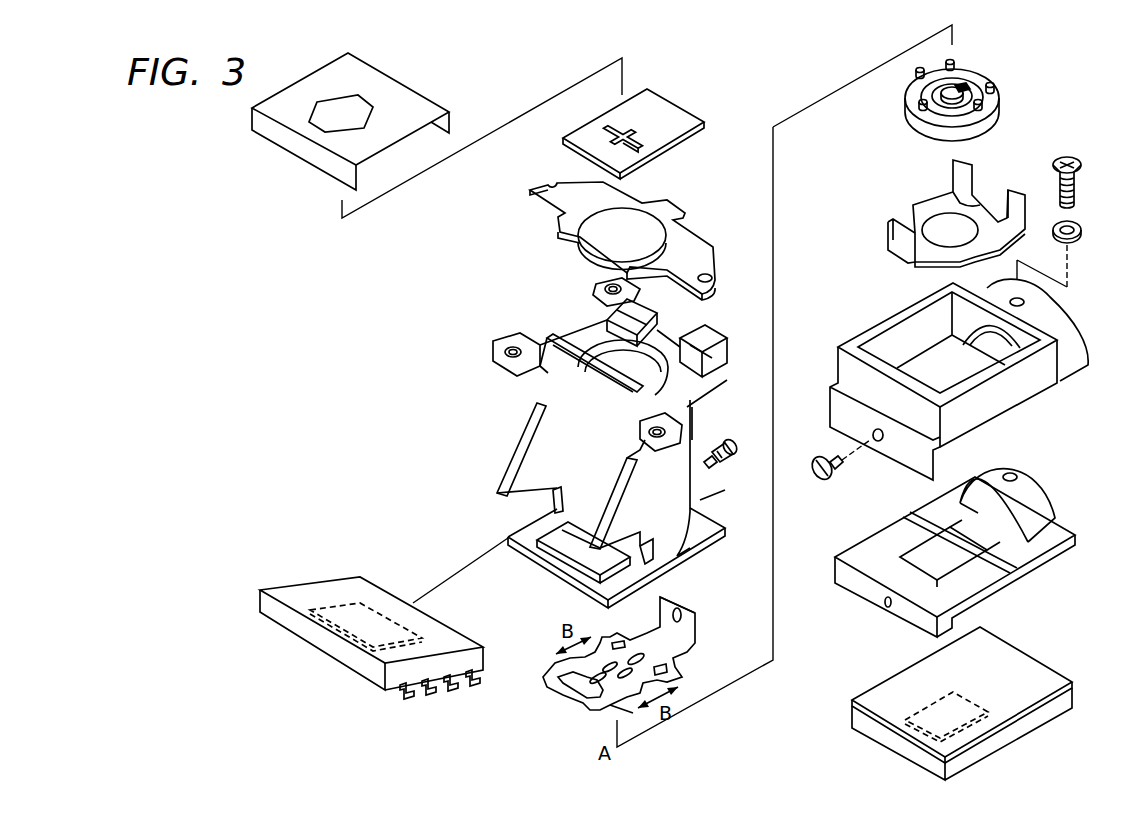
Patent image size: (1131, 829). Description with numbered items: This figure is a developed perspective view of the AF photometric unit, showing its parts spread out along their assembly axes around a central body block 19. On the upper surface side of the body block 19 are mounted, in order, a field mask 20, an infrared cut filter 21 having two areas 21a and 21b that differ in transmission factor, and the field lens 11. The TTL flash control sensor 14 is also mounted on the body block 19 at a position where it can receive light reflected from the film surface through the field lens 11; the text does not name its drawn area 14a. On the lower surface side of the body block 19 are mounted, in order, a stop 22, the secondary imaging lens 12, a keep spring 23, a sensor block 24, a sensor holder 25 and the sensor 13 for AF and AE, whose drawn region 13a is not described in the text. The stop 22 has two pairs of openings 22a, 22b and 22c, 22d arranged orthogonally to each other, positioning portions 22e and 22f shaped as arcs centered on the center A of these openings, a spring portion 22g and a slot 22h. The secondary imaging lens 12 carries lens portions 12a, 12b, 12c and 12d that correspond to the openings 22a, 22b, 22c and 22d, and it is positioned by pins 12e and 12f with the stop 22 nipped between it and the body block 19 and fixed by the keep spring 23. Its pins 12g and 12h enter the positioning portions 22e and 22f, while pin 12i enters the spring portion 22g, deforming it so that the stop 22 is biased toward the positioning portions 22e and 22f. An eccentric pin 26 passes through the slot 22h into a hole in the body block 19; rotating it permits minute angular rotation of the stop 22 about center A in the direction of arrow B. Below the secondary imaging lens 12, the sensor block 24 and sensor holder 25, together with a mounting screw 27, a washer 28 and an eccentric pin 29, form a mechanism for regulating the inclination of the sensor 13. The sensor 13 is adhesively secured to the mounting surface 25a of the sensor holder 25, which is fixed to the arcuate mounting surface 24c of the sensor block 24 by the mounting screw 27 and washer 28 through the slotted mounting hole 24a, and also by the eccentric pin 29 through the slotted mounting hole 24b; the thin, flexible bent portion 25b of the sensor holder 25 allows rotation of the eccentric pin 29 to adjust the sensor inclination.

The field lens 11 is at (583, 243).
The secondary imaging lens 12 is at (949, 92).
The lens portion 12a is at (940, 85).
The lens portion 12b is at (963, 96).
The lens portion 12c is at (977, 78).
The lens portion 12d is at (938, 118).
The pin 12e is at (915, 72).
The pin 12f is at (990, 120).
The pin 12g is at (953, 62).
The pin 12h is at (996, 88).
The pin 12i is at (919, 104).
The sensor for AF and AE 13 is at (958, 703).
The recess 13a is at (968, 702).
The TTL flash control sensor 14 is at (371, 629).
The chip area 14a is at (338, 612).
The body block 19 is at (512, 444).
The field mask 20 is at (412, 92).
The infrared cut filter 21 is at (649, 134).
The area 21a is at (643, 147).
The area 21b is at (667, 135).
The stop 22 is at (618, 666).
The opening 22a is at (610, 663).
The opening 22b is at (633, 713).
The opening 22c is at (643, 660).
The opening 22d is at (597, 672).
The positioning portion 22e is at (613, 644).
The positioning portion 22f is at (664, 672).
The spring portion 22g is at (587, 695).
The slot 22h is at (680, 613).
The keep spring 23 is at (918, 210).
The sensor block 24 is at (970, 386).
The mounting hole 24a is at (1025, 302).
The mounting hole 24b is at (878, 441).
The arcuate mounting surface 24c is at (982, 335).
The sensor holder 25 is at (967, 553).
The mounting surface 25a is at (970, 610).
The bent portion 25b is at (992, 577).
The eccentric pin 26 is at (700, 467).
The mounting screw 27 is at (1075, 183).
The washer 28 is at (1075, 242).
The eccentric pin 29 is at (818, 481).